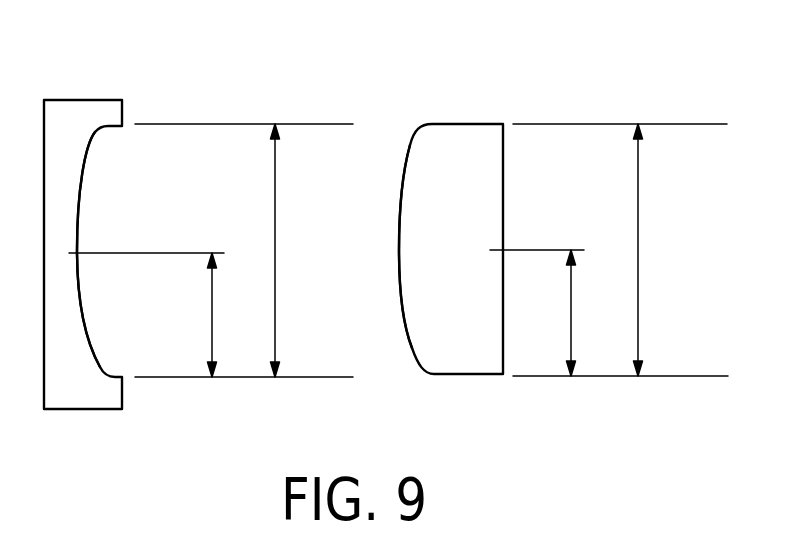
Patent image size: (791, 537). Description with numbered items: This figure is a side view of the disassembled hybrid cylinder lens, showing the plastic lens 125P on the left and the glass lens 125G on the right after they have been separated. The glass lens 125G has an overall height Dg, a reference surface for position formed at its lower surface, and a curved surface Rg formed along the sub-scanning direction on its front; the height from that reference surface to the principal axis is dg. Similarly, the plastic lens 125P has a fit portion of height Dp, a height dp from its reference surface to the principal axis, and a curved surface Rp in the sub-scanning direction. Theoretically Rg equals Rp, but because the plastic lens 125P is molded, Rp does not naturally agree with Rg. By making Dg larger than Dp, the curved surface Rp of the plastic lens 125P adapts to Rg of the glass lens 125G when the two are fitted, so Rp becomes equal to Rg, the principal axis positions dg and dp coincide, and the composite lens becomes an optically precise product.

The plastic lens 125P is at (82, 108).
The glass lens 125G is at (483, 140).
The curved surface of the plastic lens Rp is at (80, 206).
The curved surface of the glass lens Rg is at (405, 176).
The height of the fit portion of the plastic lens Dp is at (258, 250).
The height from the reference surface to the principal axis of the plastic lens dp is at (194, 315).
The height of the glass lens Dg is at (623, 250).
The height from the reference surface to the principal axis of the glass lens dg is at (556, 313).